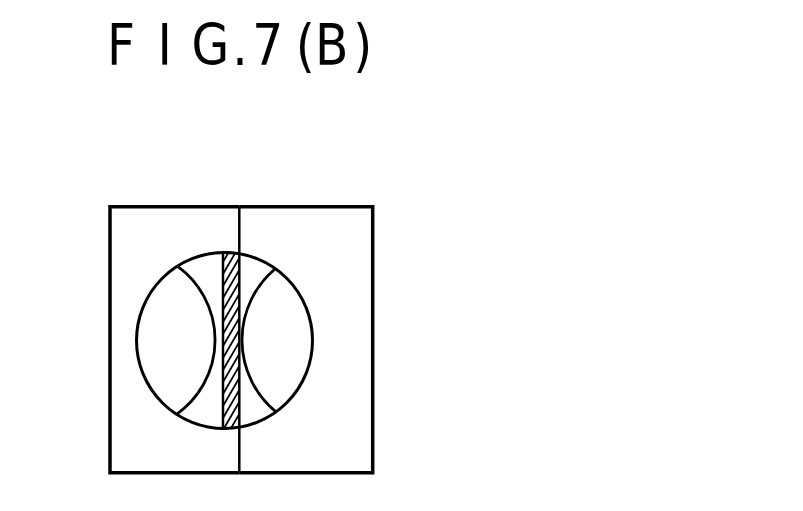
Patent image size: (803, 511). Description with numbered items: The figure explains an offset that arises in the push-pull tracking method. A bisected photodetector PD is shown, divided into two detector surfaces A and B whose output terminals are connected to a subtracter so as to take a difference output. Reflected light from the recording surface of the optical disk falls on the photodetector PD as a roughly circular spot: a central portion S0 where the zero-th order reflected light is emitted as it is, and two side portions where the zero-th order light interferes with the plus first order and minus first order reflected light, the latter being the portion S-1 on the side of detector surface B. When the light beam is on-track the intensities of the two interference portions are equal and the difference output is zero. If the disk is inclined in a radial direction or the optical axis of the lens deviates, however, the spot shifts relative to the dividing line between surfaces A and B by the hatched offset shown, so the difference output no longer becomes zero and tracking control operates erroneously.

The photodetector PD is at (257, 344).
The detector surface A is at (108, 413).
The detector surface B is at (374, 362).
The portion where zero-th order reflected light is emitted S0 is at (287, 447).
The portion where zero-th and -1st order reflected light interfere S-1 is at (266, 340).